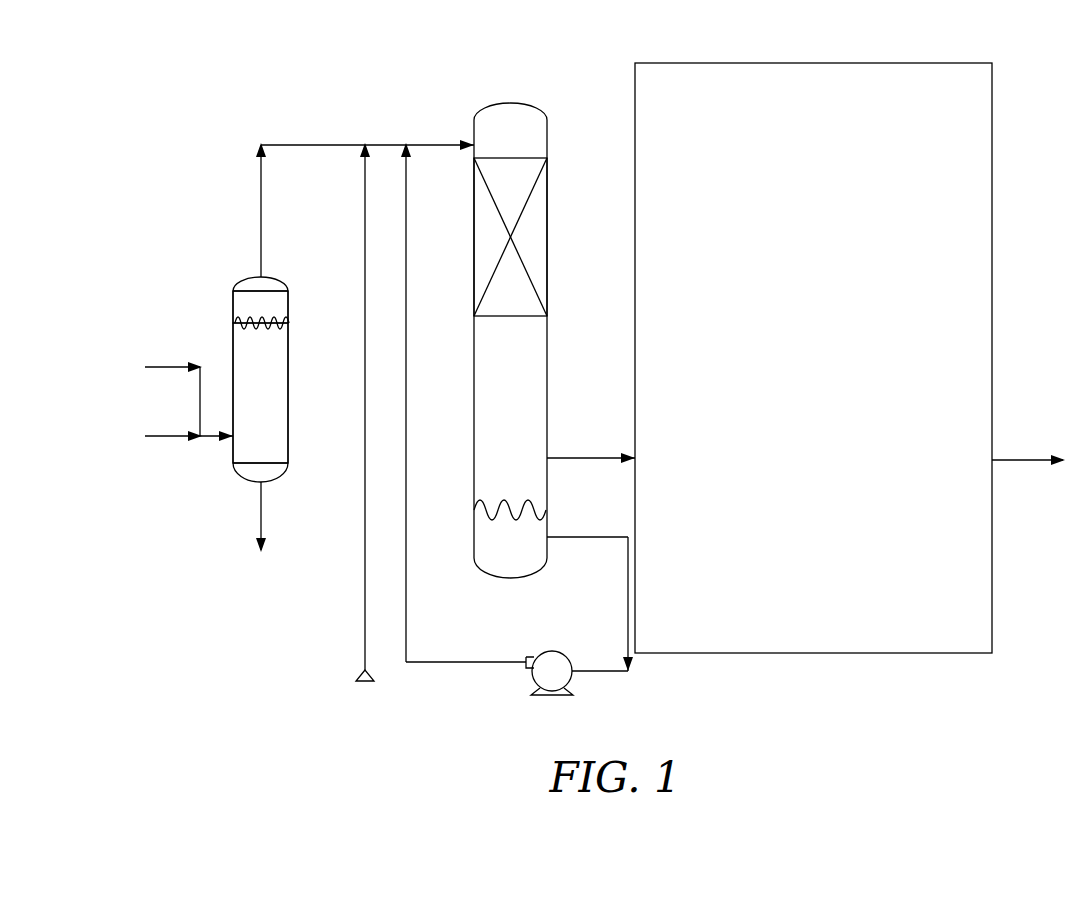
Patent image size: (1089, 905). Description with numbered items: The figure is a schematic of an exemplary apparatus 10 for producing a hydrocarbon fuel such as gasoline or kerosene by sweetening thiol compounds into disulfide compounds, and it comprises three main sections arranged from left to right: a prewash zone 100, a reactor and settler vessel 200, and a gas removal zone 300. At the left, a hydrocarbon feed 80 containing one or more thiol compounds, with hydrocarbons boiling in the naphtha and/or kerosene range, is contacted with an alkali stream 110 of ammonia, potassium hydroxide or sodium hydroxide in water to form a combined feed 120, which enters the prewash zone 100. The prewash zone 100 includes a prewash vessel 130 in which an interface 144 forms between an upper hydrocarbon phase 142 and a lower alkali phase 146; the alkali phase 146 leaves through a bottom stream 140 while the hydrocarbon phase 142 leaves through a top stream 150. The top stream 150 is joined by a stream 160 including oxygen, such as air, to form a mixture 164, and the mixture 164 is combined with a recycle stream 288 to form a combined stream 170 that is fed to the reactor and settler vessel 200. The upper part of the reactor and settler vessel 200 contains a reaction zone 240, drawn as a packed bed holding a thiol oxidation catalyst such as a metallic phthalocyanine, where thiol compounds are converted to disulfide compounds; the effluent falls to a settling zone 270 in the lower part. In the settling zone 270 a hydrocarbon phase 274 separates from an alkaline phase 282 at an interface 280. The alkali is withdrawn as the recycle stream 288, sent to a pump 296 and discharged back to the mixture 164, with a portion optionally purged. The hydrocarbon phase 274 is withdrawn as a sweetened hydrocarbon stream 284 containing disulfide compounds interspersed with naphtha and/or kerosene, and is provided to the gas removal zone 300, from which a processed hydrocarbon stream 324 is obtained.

The apparatus 10 is at (190, 72).
The prewash zone 100 is at (115, 252).
The hydrocarbon feed 80 is at (167, 362).
The alkali stream 110 is at (168, 430).
The combined feed 120 is at (207, 445).
The prewash vessel 130 is at (293, 298).
The hydrocarbon phase 142 is at (250, 303).
The interface 144 is at (289, 325).
The alkali phase 146 is at (262, 394).
The bottom stream 140 is at (262, 506).
The top stream 150 is at (262, 212).
The stream including oxygen 160 is at (365, 611).
The mixture 164 is at (391, 140).
The combined stream 170 is at (434, 140).
The reactor and settler vessel 200 is at (509, 100).
The reaction zone 240 is at (533, 202).
The settling zone 270 is at (517, 423).
The hydrocarbon phase 274 is at (516, 476).
The interface 280 is at (474, 510).
The alkaline phase 282 is at (504, 540).
The sweetened hydrocarbon stream 284 is at (585, 455).
The recycle stream 288 is at (589, 534).
The pump 296 is at (552, 651).
The gas removal zone 300 is at (993, 607).
The processed hydrocarbon stream 324 is at (1026, 458).